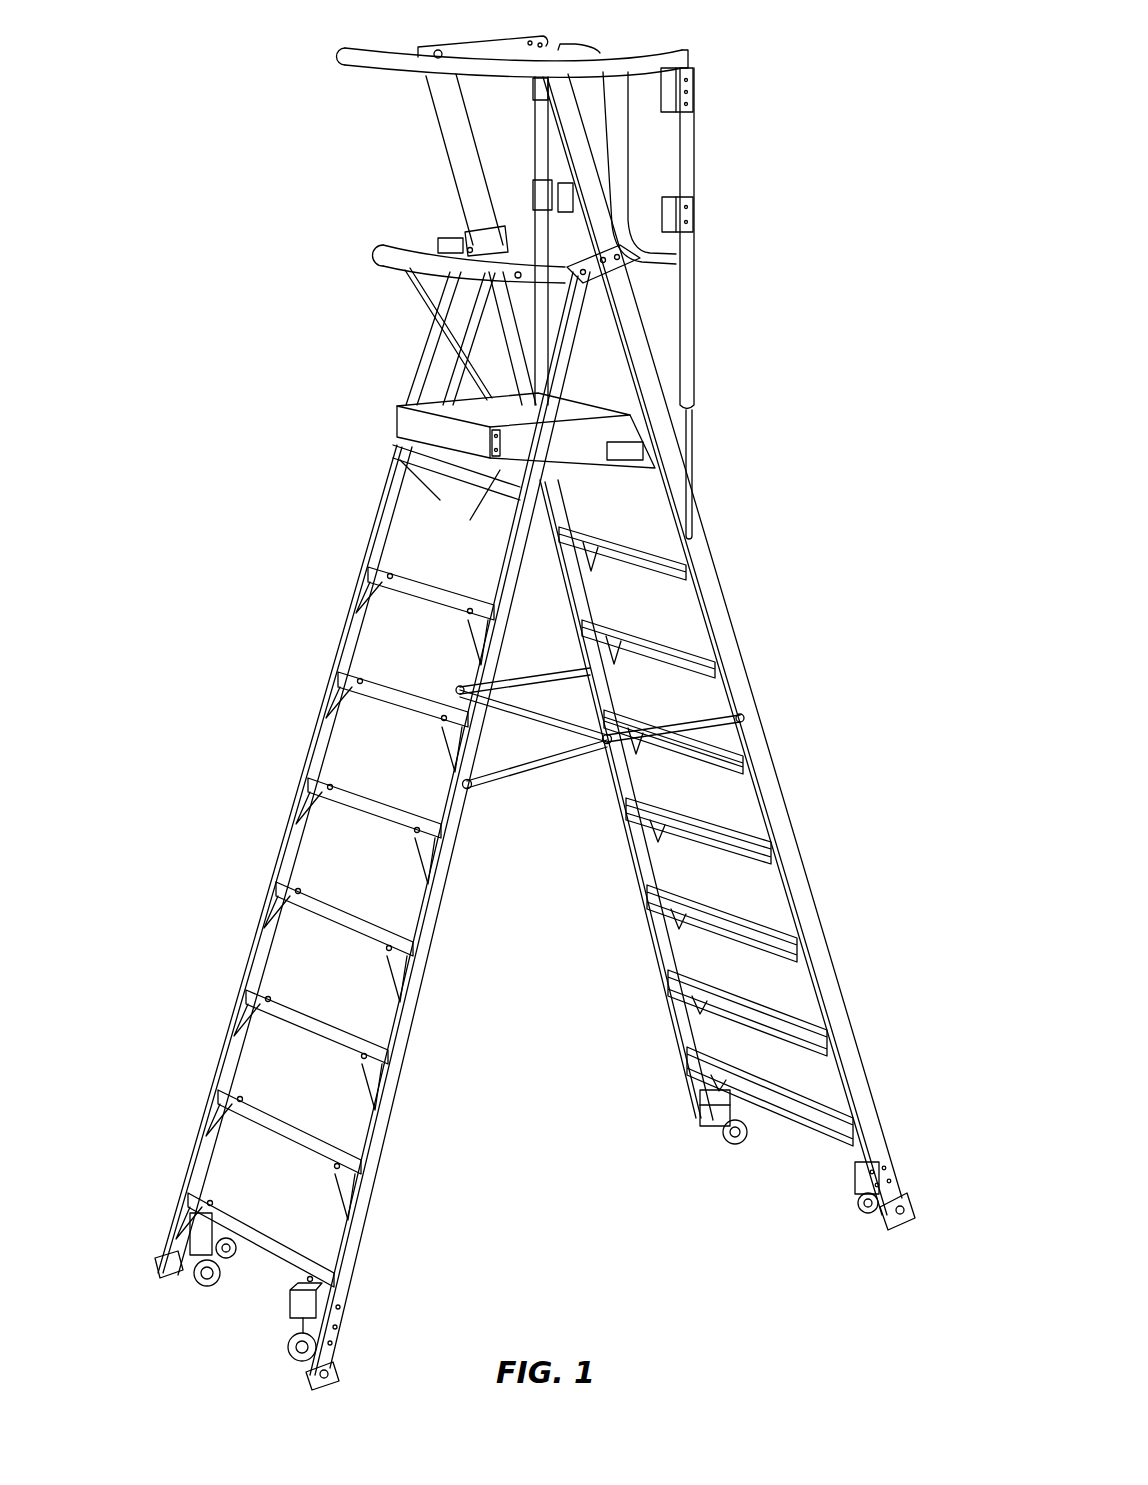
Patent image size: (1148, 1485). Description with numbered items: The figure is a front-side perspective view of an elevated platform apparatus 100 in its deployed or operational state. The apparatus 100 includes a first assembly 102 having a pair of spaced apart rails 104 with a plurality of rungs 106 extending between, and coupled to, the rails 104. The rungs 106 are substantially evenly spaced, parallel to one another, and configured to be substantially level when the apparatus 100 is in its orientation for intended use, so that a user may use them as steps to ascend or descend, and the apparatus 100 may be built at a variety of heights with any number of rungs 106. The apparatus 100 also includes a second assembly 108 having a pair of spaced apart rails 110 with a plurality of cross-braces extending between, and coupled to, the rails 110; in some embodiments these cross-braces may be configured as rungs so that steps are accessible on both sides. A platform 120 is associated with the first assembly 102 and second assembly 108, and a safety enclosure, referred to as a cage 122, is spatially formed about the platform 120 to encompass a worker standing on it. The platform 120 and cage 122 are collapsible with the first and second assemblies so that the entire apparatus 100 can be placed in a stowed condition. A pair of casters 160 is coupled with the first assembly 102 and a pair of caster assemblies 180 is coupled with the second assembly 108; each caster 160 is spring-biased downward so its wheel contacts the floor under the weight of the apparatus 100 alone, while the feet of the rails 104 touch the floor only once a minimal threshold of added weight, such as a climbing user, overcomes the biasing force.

The elevated platform apparatus 100 is at (758, 116).
The first assembly 102 is at (803, 730).
The rails 104 is at (726, 603).
The rungs 106 is at (690, 878).
The second assembly 108 is at (297, 626).
The rails 110 is at (312, 750).
The platform 120 is at (455, 402).
The cage 122 is at (352, 90).
The casters 160 is at (712, 1143).
The caster assemblies 180 is at (186, 1291).